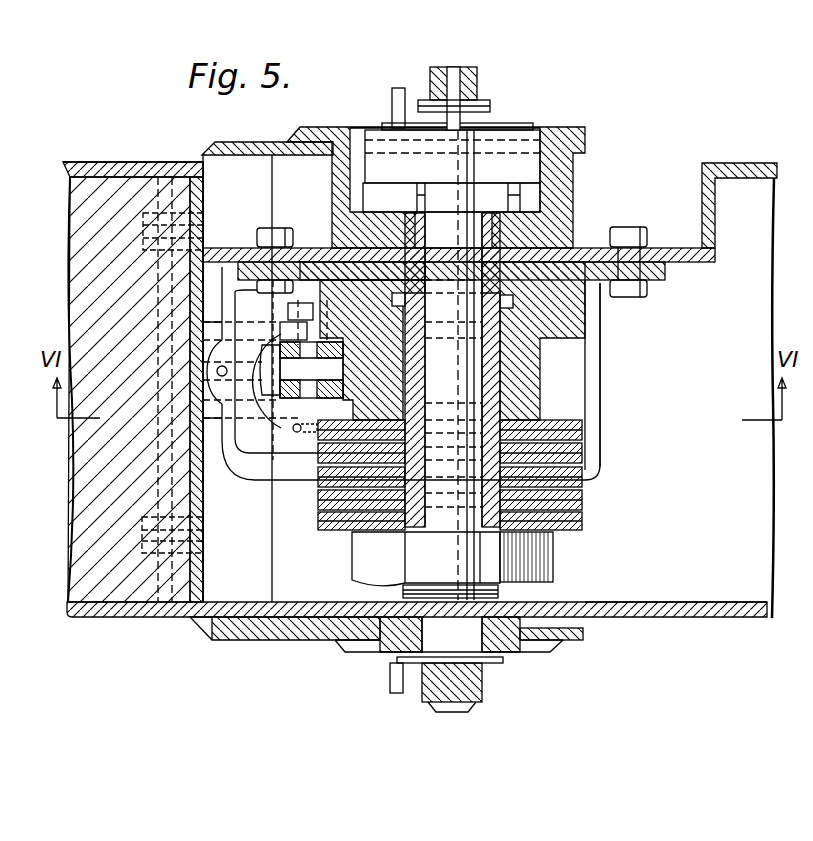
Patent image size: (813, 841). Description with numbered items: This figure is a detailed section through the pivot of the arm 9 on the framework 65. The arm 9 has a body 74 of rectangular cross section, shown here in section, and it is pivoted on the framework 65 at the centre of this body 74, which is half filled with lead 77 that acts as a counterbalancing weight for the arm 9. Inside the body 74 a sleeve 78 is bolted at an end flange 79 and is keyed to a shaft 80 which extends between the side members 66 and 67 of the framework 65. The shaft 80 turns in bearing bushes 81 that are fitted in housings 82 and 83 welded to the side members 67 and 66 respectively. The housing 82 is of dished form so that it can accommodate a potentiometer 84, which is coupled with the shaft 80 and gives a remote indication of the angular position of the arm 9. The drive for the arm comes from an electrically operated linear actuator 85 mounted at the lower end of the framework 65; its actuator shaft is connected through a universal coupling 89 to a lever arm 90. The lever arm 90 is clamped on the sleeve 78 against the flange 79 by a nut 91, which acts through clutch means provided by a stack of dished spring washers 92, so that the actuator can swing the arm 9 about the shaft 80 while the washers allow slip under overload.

The arm 9 is at (673, 610).
The framework 65 is at (270, 637).
The side member 66 is at (310, 650).
The side member 67 is at (237, 147).
The body 74 is at (723, 165).
The lead 77 is at (100, 190).
The sleeve 78 is at (487, 367).
The end flange 79 is at (665, 273).
The shaft 80 is at (450, 410).
The bearing bush 81 is at (492, 213).
The housing 82 is at (573, 178).
The housing 83 is at (543, 647).
The potentiometer 84 is at (500, 163).
The linear actuator 85 is at (270, 447).
The universal coupling 89 is at (300, 393).
The lever arm 90 is at (375, 408).
The nut 91 is at (362, 552).
The dished spring washers 92 is at (583, 515).